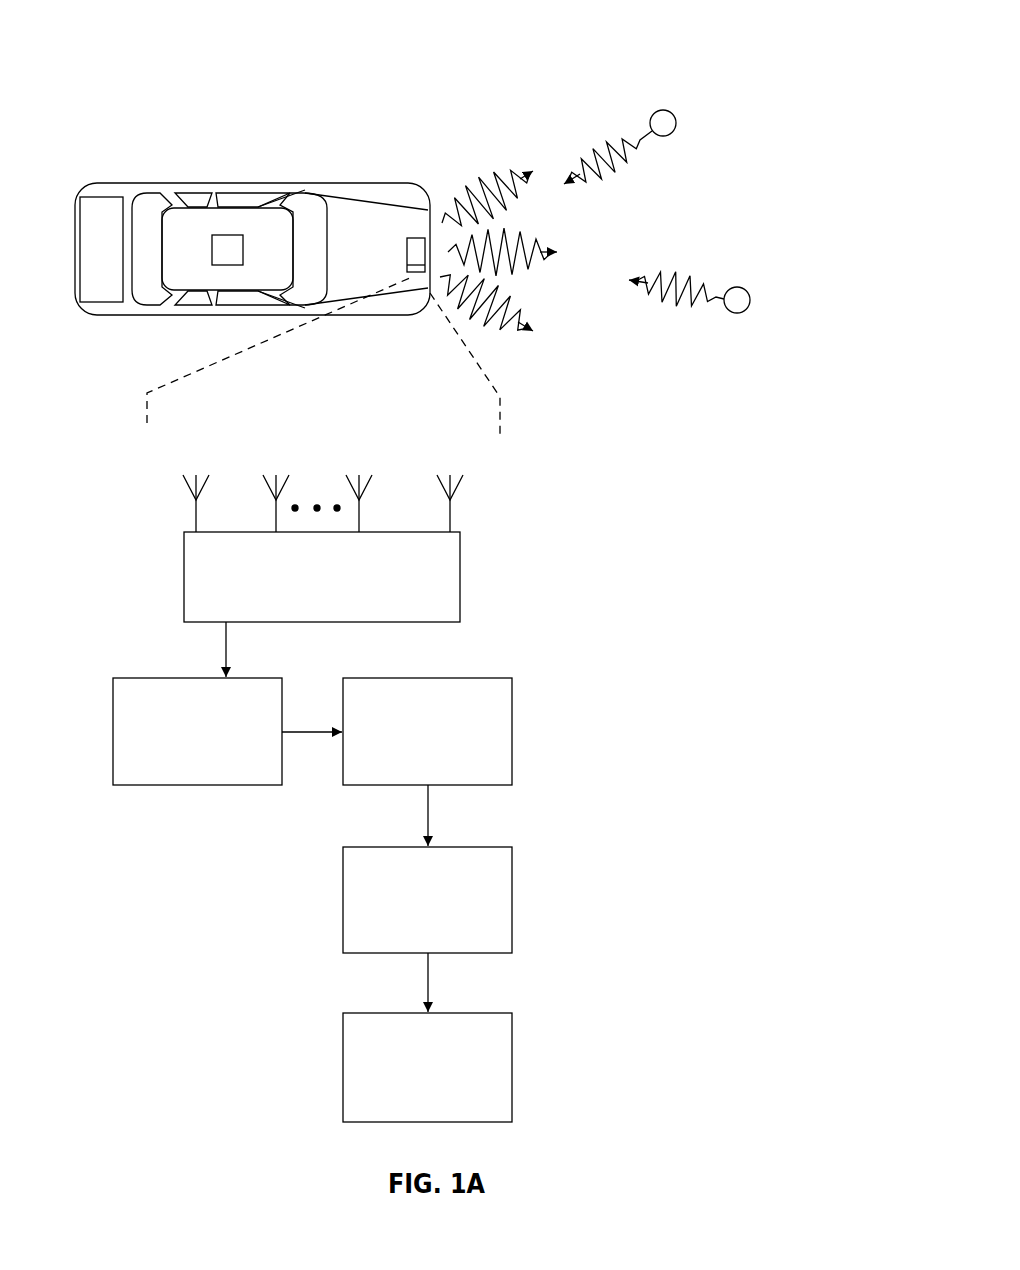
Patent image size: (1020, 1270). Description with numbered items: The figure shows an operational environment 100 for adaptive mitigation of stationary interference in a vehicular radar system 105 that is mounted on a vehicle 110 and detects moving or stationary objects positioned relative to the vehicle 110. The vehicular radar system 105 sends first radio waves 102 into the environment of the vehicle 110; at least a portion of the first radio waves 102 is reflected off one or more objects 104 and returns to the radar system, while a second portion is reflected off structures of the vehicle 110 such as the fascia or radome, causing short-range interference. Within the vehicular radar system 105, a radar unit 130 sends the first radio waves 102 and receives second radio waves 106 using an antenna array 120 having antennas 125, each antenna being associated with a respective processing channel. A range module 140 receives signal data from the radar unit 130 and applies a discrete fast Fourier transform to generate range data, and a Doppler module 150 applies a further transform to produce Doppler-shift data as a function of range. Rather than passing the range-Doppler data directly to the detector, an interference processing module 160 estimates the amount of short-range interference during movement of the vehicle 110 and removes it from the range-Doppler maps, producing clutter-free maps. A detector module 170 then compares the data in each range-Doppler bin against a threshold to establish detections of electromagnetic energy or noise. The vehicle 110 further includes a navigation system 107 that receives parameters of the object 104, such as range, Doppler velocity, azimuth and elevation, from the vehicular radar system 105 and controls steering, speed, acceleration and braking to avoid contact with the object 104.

The operational environment 100 is at (692, 44).
The vehicle 110 is at (112, 184).
The navigation system 107 is at (228, 250).
The vehicular radar system 105 is at (408, 253).
The first radio waves 102 is at (447, 176).
The objects 104 is at (675, 113).
The second radio waves 106 is at (566, 136).
The antenna array 120 is at (325, 480).
The antennas 125 is at (325, 480).
The radar unit 130 is at (184, 585).
The range module 140 is at (178, 678).
The Doppler module 150 is at (447, 678).
The interference processing module 160 is at (447, 847).
The detector module 170 is at (447, 1013).